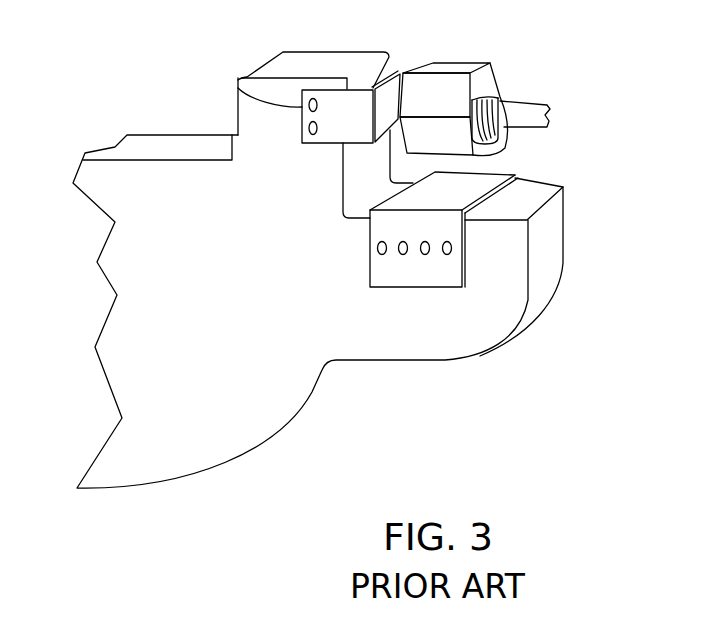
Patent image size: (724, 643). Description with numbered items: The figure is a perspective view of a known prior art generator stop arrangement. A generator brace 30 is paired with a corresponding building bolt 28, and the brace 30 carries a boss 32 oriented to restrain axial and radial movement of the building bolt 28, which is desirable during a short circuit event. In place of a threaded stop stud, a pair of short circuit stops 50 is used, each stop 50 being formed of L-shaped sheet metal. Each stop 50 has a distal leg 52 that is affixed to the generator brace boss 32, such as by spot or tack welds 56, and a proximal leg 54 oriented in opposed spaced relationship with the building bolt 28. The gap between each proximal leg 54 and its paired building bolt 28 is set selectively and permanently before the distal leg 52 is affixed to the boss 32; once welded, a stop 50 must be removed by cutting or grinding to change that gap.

The building bolt 28 is at (482, 83).
The generator brace 30 is at (85, 308).
The boss 32 is at (580, 240).
The short circuit stop 50 is at (373, 82).
The distal leg 52 is at (320, 138).
The proximal leg 54 is at (462, 190).
The welds 56 is at (238, 88).